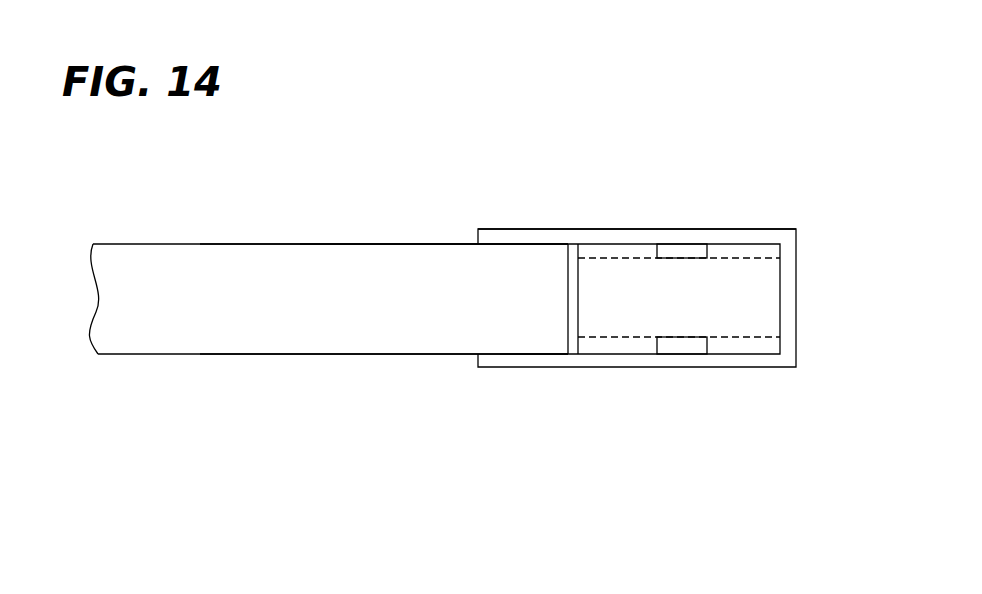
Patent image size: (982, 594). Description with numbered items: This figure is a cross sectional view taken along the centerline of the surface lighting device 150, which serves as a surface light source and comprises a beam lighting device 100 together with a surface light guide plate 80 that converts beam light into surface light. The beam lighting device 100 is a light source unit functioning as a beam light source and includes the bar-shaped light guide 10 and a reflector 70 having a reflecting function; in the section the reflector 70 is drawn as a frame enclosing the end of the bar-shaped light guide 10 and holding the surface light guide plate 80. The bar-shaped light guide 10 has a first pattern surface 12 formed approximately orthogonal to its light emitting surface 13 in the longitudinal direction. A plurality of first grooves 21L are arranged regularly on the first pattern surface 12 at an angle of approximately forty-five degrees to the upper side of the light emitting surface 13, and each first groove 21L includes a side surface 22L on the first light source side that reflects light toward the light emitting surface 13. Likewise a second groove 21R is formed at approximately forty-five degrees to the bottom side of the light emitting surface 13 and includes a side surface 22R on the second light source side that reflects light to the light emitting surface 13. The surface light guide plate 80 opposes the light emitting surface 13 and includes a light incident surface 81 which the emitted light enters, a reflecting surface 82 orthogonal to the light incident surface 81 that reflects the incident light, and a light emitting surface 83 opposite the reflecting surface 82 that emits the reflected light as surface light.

The bar-shaped light guide 10 is at (631, 317).
The first pattern surface 12 is at (605, 242).
The light emitting surface 13 is at (567, 287).
The first groove 21L is at (727, 248).
The second groove 21R is at (740, 345).
The side surface on the first light source side 22L is at (690, 253).
The side surface on the second light source side 22R is at (672, 348).
The reflector 70 is at (796, 302).
The surface light guide plate 80 is at (200, 258).
The light incident surface 81 is at (565, 330).
The reflecting surface 82 is at (237, 354).
The light emitting surface 83 is at (275, 244).
The beam lighting device 100 is at (684, 312).
The surface lighting device 150 is at (360, 368).